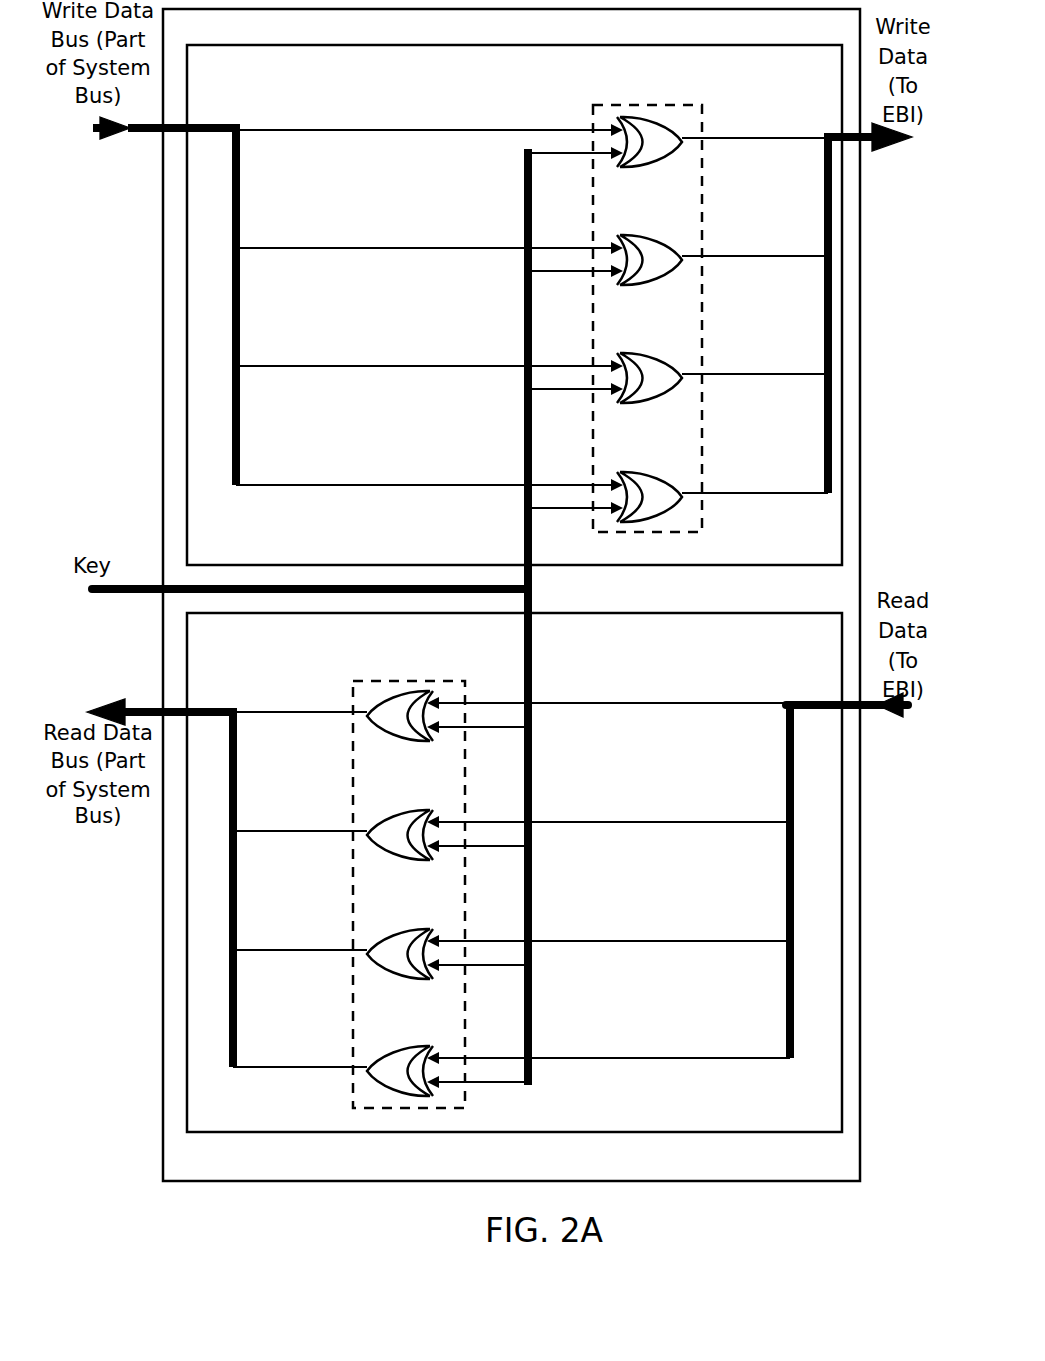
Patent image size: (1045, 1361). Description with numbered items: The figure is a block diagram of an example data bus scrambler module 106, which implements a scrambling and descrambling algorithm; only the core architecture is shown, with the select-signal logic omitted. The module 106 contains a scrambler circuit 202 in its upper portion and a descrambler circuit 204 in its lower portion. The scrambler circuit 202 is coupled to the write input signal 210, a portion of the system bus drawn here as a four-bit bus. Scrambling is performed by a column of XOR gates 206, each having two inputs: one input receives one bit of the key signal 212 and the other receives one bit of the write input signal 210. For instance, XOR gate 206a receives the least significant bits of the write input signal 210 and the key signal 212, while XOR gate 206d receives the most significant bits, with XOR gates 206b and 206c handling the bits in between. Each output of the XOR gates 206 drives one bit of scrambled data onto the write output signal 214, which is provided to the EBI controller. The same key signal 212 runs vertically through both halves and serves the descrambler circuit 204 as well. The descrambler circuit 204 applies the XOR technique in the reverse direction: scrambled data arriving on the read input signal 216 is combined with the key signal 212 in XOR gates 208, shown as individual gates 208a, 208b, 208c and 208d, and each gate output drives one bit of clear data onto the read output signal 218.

The data bus scrambler module 106 is at (847, 37).
The scrambler circuit 202 is at (257, 107).
The descrambler circuit 204 is at (791, 674).
The XOR gates 206 is at (697, 105).
The XOR gate 206a is at (647, 168).
The XOR gate 206b is at (642, 286).
The XOR gate 206c is at (642, 404).
The XOR gate 206d is at (684, 548).
The XOR gates 208 is at (355, 681).
The XOR gate 208a is at (393, 742).
The XOR gate 208b is at (382, 861).
The XOR gate 208c is at (385, 980).
The XOR gate 208d is at (380, 1097).
The write input signal 210 is at (240, 200).
The key signal 212 is at (533, 586).
The write output signal 214 is at (822, 130).
The read input signal 216 is at (787, 755).
The read output signal 218 is at (222, 702).